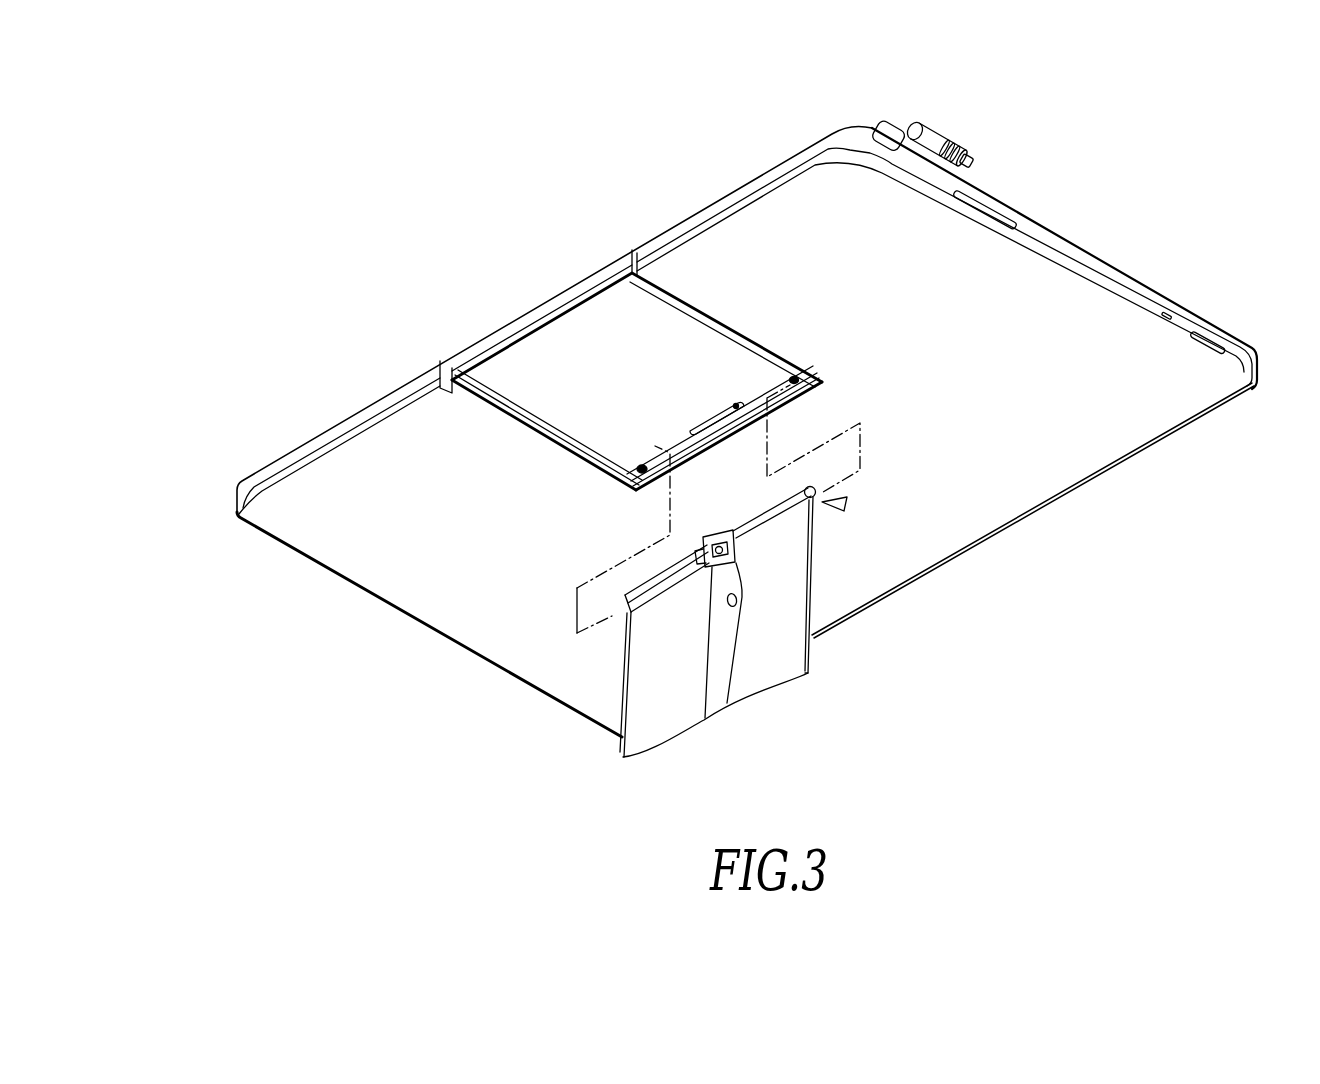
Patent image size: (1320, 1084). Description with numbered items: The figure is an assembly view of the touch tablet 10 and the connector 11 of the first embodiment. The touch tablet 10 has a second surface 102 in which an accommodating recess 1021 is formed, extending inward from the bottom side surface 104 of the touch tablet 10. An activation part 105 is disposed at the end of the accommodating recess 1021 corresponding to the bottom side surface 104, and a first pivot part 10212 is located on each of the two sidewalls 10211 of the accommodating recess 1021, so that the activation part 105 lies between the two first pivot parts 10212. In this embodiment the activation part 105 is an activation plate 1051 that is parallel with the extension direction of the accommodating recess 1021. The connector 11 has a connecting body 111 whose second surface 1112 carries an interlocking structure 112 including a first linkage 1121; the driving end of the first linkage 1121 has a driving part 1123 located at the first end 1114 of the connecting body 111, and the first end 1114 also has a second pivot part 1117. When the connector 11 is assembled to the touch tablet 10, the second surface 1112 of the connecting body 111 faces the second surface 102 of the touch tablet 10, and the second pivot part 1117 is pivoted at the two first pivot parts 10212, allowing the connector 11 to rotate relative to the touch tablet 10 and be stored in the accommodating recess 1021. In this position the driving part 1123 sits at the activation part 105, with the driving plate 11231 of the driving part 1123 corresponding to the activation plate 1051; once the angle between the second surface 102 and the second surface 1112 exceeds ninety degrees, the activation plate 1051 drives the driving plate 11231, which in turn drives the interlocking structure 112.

The touch tablet 10 is at (294, 432).
The second surface 102 is at (433, 560).
The bottom side surface 104 is at (415, 382).
The activation part 105 is at (707, 420).
The accommodating recess 1021 is at (585, 360).
The sidewalls 10211 is at (543, 436).
The first pivot part 10212 is at (822, 382).
The activation plate 1051 is at (733, 407).
The connector 11 is at (823, 580).
The connecting body 111 is at (810, 617).
The second surface 1112 is at (778, 648).
The first end 1114 is at (830, 505).
The second pivot part 1117 is at (826, 498).
The interlocking structure 112 is at (700, 670).
The first linkage 1121 is at (628, 700).
The driving part 1123 is at (633, 611).
The driving plate 11231 is at (700, 545).